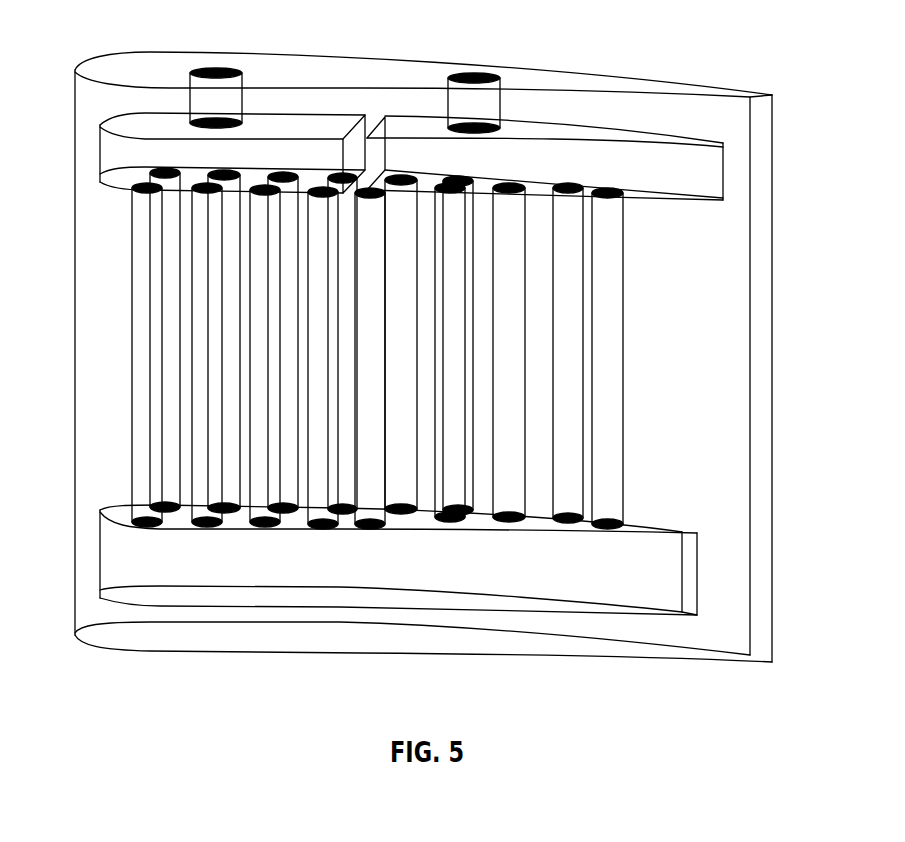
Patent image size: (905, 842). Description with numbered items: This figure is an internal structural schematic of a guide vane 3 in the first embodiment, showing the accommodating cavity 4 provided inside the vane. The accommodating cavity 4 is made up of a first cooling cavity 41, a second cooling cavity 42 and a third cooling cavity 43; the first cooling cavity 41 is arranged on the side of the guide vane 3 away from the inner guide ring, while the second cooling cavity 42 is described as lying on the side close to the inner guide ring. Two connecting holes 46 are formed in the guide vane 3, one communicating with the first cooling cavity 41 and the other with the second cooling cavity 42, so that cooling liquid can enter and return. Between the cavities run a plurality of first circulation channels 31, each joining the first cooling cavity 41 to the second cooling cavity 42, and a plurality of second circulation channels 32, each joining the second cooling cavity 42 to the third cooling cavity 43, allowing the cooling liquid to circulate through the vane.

The guide vane 3 is at (421, 348).
The accommodating cavity 4 is at (683, 127).
The first circulation channel 31 is at (173, 272).
The second circulation channel 32 is at (573, 287).
The first cooling cavity 41 is at (278, 123).
The second cooling cavity 42 is at (568, 578).
The third cooling cavity 43 is at (587, 152).
The connecting hole 46 is at (208, 83).